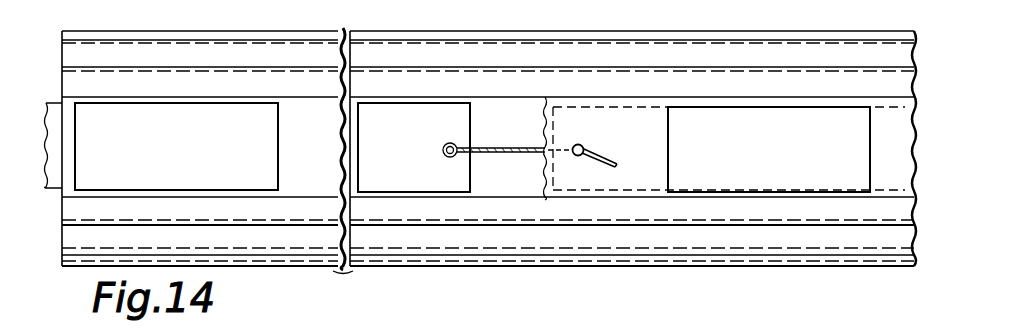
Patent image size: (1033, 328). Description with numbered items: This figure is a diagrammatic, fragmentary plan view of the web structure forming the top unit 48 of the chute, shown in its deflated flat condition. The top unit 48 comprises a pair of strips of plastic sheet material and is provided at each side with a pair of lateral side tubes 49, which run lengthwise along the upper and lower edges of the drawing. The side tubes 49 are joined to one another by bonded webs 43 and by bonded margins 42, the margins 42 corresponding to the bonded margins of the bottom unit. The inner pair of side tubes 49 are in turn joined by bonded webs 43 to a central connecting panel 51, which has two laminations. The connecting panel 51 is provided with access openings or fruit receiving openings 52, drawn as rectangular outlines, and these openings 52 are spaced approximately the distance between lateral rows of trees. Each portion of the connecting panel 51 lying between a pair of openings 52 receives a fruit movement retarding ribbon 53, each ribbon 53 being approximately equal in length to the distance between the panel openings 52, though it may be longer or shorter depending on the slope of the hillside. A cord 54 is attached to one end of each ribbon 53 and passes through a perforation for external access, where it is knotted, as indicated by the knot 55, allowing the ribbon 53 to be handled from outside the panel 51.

The bonded margins 42 is at (428, 30).
The bonded webs 43 is at (826, 97).
The top unit 48 is at (276, 30).
The lateral side tubes 49 is at (632, 65).
The connecting panel 51 is at (292, 128).
The fruit receiving openings 52 is at (78, 145).
The fruit movement retarding ribbon 53 is at (420, 150).
The cord 54 is at (520, 146).
The knot 55 is at (580, 144).